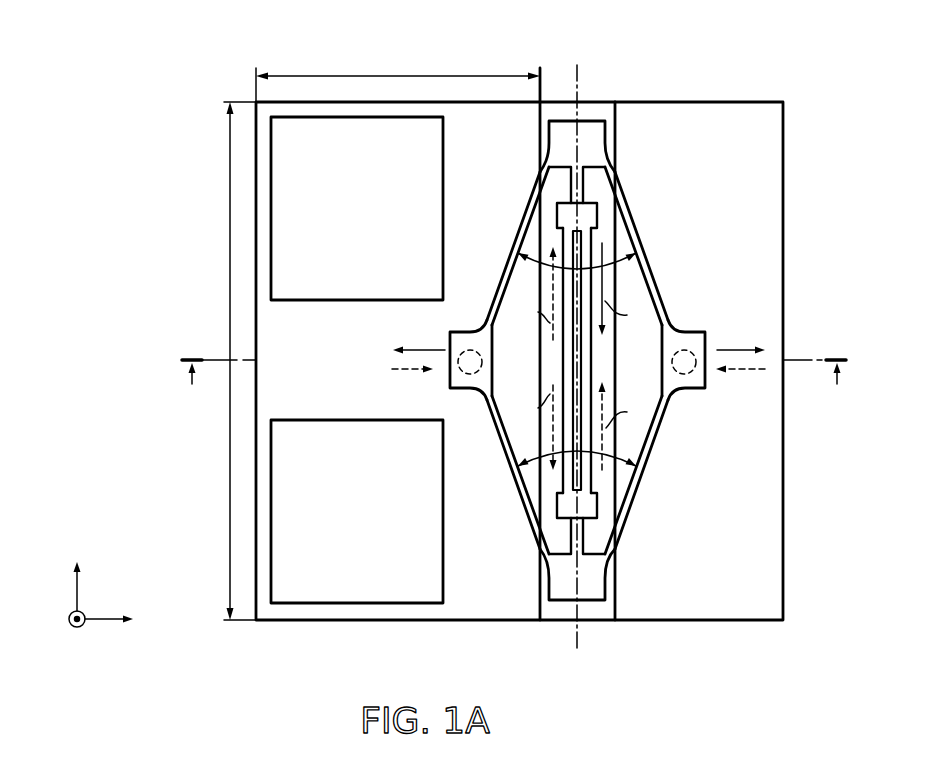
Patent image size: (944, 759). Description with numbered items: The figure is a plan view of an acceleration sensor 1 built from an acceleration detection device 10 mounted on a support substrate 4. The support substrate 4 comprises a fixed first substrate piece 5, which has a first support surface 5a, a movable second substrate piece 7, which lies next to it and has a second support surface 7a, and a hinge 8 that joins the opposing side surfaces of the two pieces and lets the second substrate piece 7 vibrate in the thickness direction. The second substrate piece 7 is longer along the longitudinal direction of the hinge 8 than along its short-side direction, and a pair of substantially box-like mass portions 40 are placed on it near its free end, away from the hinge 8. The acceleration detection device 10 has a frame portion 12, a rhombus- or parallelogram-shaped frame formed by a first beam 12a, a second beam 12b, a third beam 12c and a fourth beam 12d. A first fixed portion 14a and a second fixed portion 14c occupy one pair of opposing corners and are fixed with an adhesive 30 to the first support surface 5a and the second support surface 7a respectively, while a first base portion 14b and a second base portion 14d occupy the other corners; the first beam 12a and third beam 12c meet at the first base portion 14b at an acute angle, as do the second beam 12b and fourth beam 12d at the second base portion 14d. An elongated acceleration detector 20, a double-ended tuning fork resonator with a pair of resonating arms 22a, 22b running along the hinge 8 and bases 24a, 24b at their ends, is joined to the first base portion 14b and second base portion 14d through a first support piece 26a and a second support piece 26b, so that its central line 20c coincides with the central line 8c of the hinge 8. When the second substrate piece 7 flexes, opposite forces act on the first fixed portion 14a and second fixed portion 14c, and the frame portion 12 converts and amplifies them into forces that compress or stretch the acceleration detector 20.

The acceleration sensor 1 is at (268, 51).
The support substrate 4 is at (307, 636).
The first substrate piece 5 is at (784, 478).
The first support surface 5a is at (746, 577).
The second substrate piece 7 is at (371, 100).
The second support surface 7a is at (458, 612).
The hinge 8 is at (556, 108).
The central line of hinge 8c is at (574, 80).
The acceleration detection device 10 is at (728, 156).
The frame portion 12 is at (555, 353).
The first beam 12a is at (633, 222).
The second beam 12b is at (647, 463).
The third beam 12c is at (512, 241).
The fourth beam 12d is at (507, 462).
The first fixed portion 14a is at (686, 378).
The first base portion 14b is at (592, 128).
The second fixed portion 14c is at (457, 342).
The second base portion 14d is at (560, 592).
The acceleration detector 20 is at (615, 280).
The central line of acceleration detector 20c is at (546, 572).
The resonating arm 22a is at (563, 364).
The resonating arm 22b is at (592, 368).
The base 24a is at (590, 203).
The base 24b is at (558, 512).
The first support piece 26a is at (572, 183).
The second support piece 26b is at (584, 532).
The adhesive 30 is at (465, 373).
The mass portion 40 is at (316, 125).